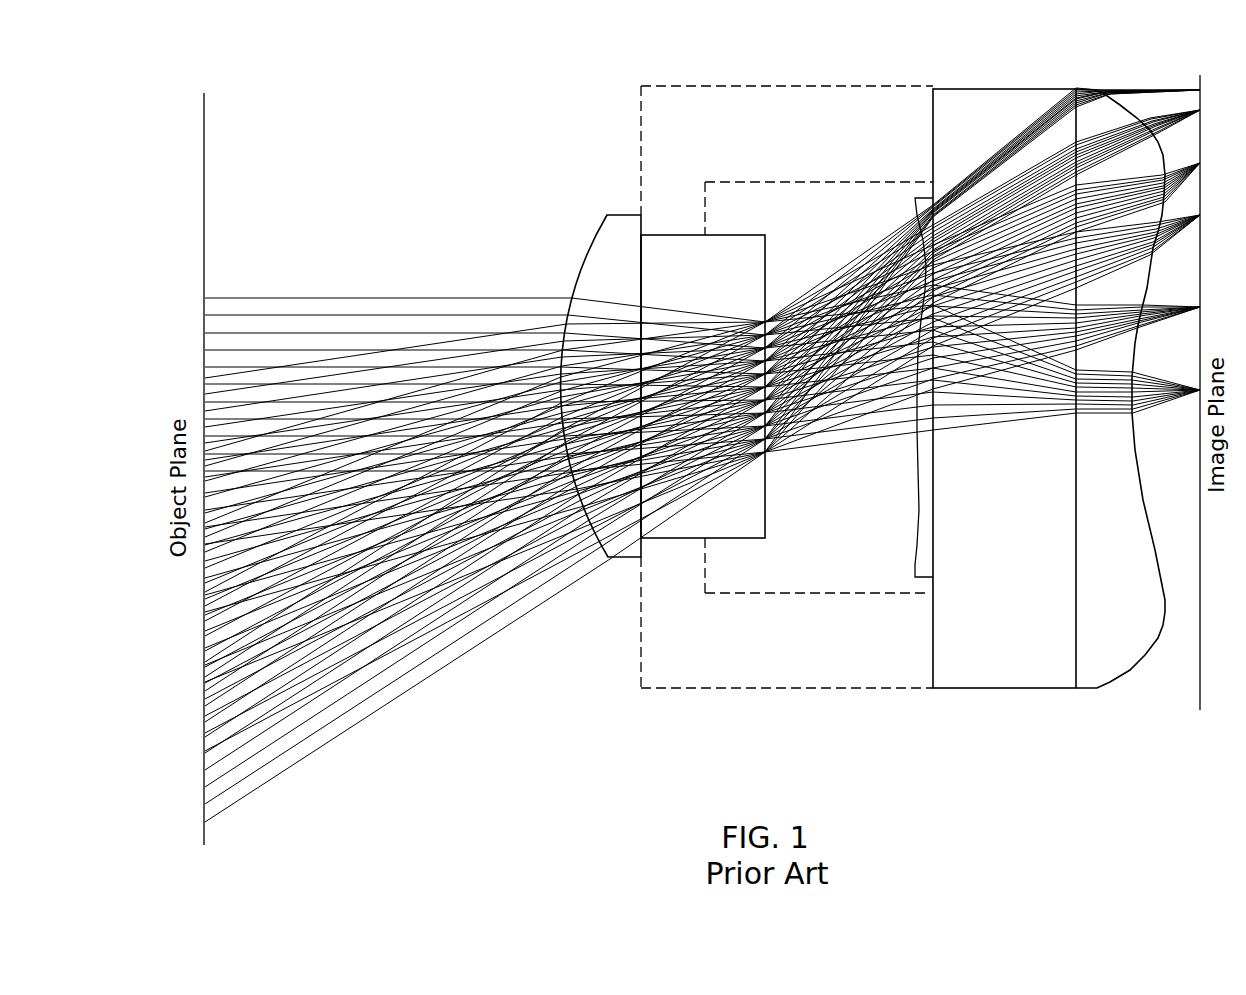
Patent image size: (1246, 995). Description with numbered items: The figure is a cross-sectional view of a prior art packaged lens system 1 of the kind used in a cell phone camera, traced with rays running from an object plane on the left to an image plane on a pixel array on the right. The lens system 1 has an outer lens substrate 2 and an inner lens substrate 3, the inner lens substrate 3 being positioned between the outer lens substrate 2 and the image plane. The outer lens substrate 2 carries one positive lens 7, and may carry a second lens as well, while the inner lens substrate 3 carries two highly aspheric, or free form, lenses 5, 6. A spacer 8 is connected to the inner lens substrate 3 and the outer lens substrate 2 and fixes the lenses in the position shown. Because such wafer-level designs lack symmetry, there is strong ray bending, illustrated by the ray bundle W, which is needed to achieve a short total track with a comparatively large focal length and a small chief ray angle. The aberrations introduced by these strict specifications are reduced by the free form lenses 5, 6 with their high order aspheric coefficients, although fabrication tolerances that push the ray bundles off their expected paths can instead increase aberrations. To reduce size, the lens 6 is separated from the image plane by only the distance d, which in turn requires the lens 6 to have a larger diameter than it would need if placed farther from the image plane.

The packaged lens system 1 is at (702, 430).
The outer lens substrate 2 is at (704, 285).
The inner lens substrate 3 is at (1009, 636).
The free form lens 5 is at (913, 580).
The free form lens 6 is at (1117, 365).
The positive lens 7 is at (619, 281).
The spacer 8 is at (663, 690).
The ray bundle W is at (1095, 89).
The distance d is at (1200, 620).